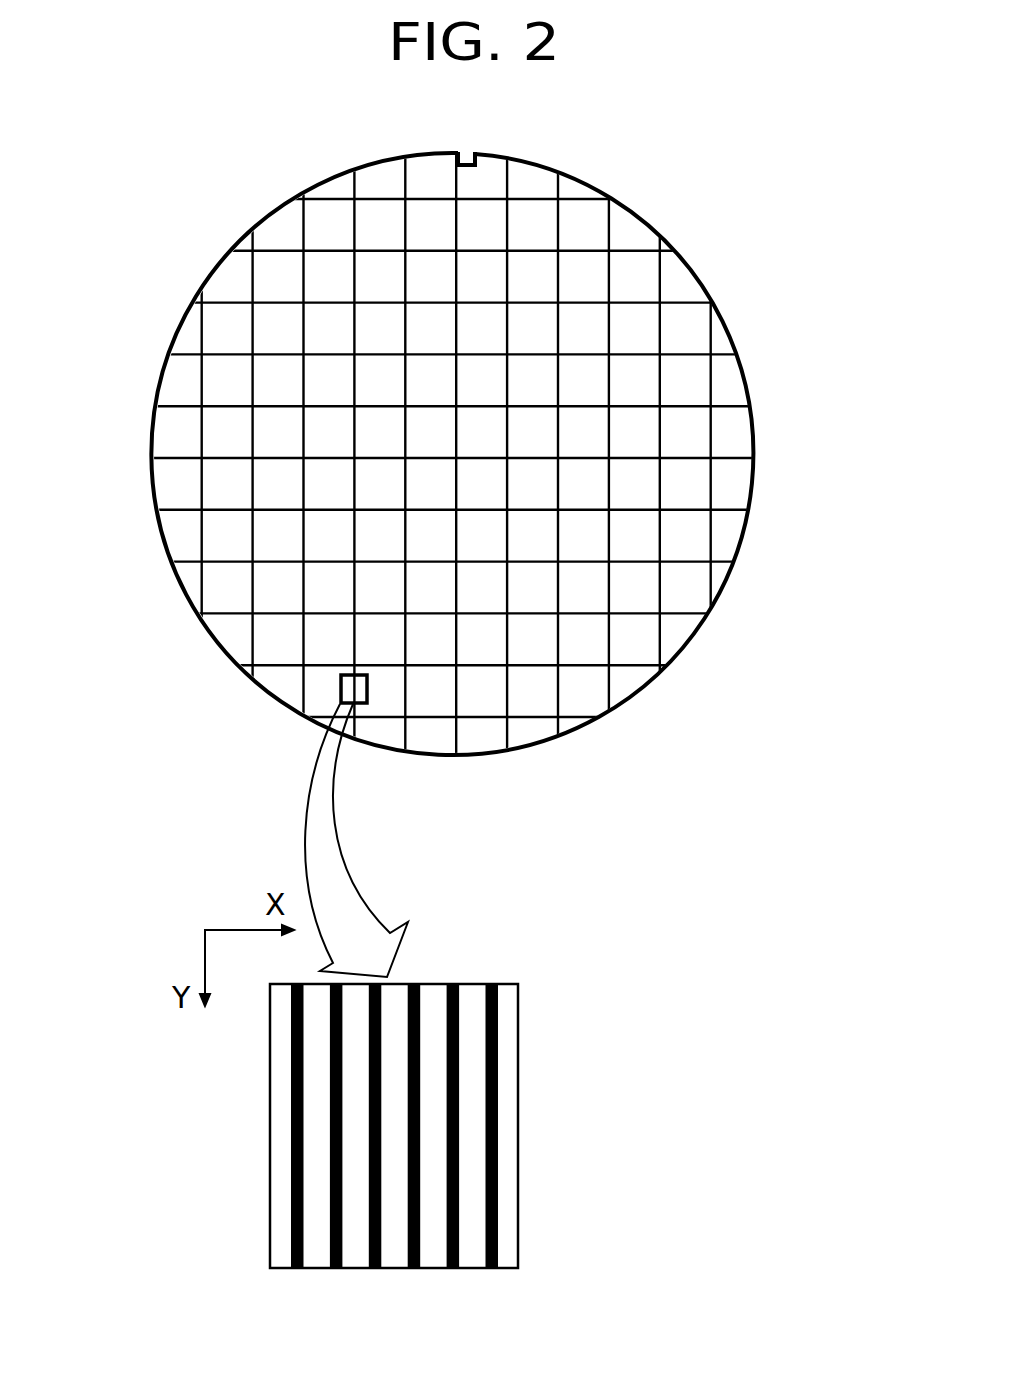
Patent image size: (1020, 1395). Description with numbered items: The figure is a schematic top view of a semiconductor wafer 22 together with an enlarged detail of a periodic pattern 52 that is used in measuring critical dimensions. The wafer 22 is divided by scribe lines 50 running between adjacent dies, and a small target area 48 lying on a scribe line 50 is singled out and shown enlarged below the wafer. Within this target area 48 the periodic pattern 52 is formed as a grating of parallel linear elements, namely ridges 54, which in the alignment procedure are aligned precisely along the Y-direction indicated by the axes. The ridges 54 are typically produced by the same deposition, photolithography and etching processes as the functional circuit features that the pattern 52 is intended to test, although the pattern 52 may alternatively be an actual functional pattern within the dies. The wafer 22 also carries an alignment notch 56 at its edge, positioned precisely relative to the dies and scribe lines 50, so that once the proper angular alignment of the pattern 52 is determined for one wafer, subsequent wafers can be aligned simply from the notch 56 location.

The wafer 22 is at (153, 473).
The alignment notch 56 is at (475, 162).
The scribe line 50 is at (353, 630).
The target area 48 is at (368, 687).
The periodic pattern 52 is at (518, 1040).
The ridges 54 is at (487, 983).